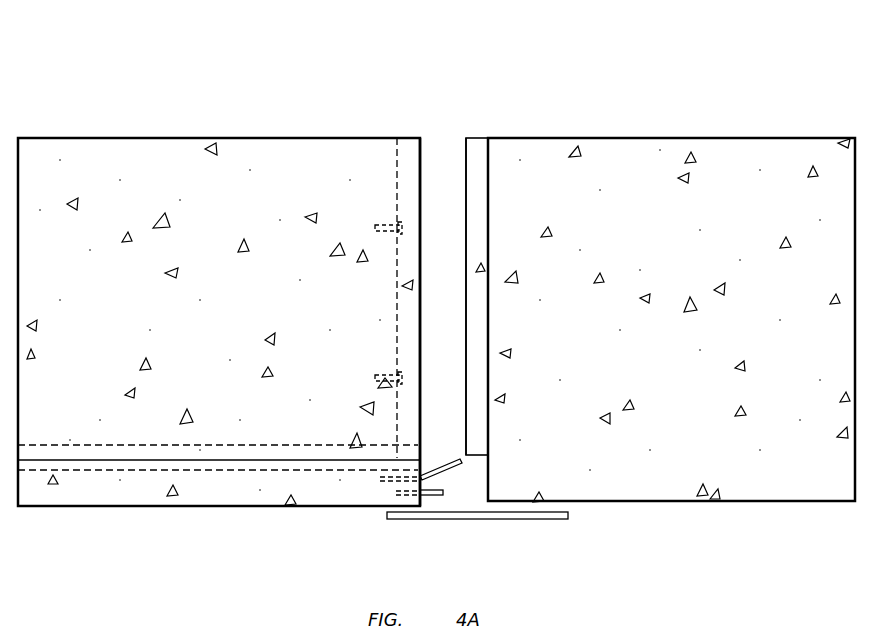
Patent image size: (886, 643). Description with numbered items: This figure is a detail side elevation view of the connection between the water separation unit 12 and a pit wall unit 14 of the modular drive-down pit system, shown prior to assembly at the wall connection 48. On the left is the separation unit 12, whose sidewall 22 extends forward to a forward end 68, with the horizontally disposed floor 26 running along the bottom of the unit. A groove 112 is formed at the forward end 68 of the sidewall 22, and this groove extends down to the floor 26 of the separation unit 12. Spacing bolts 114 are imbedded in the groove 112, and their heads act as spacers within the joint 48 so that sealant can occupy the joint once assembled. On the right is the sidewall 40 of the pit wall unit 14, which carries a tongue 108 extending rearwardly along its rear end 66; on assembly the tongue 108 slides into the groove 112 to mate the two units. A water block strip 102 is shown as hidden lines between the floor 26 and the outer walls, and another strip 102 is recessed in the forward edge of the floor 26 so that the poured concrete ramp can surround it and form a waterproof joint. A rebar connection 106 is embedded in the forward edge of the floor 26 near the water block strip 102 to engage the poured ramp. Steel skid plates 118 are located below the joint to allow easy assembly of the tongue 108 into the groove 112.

The water separation unit 12 is at (229, 96).
The pit wall unit 14 is at (623, 96).
The sidewall 22 is at (58, 148).
The floor 26 is at (250, 497).
The sidewall of pit wall unit 40 is at (723, 148).
The wall connection joint 48 is at (385, 536).
The rear end 66 is at (487, 177).
The forward end 68 is at (421, 148).
The water block strip 102 is at (138, 464).
The rebar connection 106 is at (460, 458).
The tongue 108 is at (466, 285).
The groove 112 is at (398, 173).
The spacing bolt 114 is at (382, 222).
The steel skid plate 118 is at (551, 521).